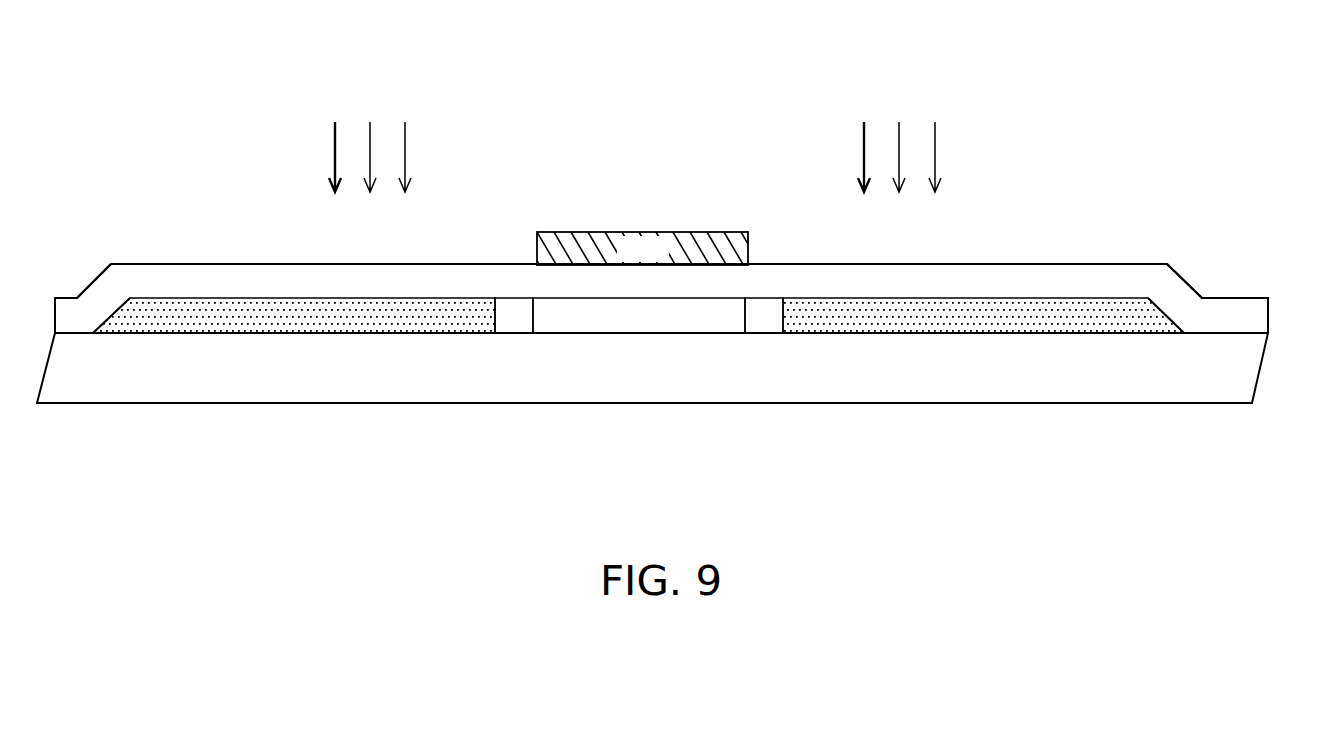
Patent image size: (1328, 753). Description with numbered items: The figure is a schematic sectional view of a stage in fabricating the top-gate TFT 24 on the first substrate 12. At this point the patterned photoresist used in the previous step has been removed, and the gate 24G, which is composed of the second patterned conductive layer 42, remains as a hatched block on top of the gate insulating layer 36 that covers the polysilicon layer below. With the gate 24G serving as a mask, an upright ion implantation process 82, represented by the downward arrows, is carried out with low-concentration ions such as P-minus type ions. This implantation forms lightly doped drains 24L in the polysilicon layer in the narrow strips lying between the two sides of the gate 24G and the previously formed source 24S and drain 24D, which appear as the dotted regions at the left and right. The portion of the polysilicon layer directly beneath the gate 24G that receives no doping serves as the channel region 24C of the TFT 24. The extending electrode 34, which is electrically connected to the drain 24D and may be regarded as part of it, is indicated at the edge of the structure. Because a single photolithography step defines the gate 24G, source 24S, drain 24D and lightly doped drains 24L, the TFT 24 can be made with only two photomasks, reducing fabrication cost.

The first substrate 12 is at (1245, 368).
The TFT 24 is at (1150, 108).
The source 24S is at (347, 318).
The drain 24D is at (998, 318).
The lightly doped drains 24L is at (517, 318).
The channel region 24C is at (635, 320).
The gate 24G is at (668, 261).
The second patterned conductive layer 42 is at (750, 246).
The extending electrode 34 is at (105, 328).
The gate insulating layer 36 is at (1250, 319).
The upright ion implantation process 82 is at (333, 152).